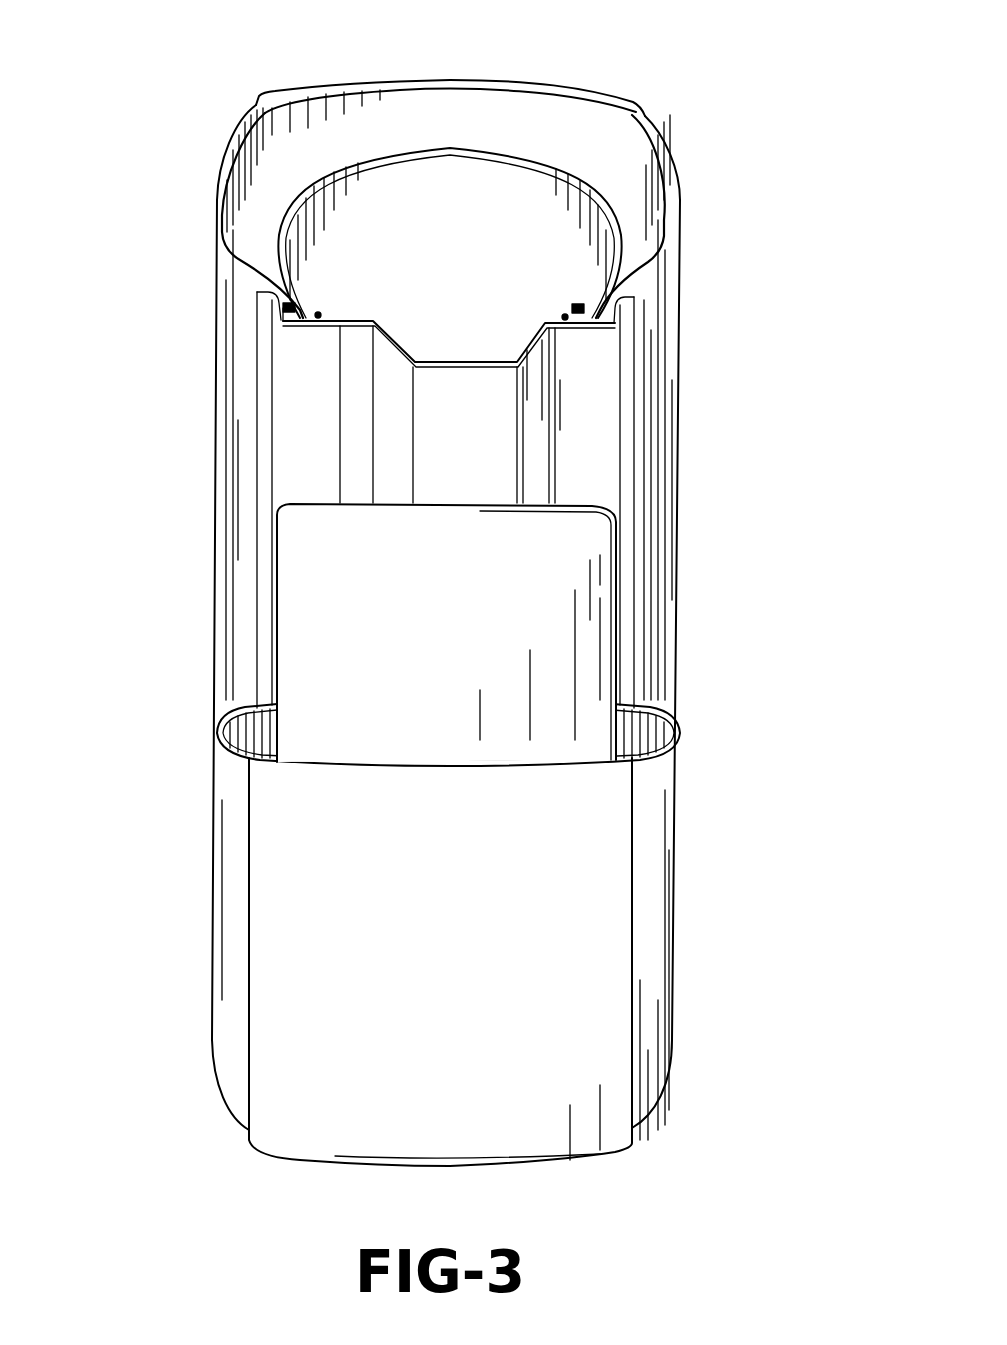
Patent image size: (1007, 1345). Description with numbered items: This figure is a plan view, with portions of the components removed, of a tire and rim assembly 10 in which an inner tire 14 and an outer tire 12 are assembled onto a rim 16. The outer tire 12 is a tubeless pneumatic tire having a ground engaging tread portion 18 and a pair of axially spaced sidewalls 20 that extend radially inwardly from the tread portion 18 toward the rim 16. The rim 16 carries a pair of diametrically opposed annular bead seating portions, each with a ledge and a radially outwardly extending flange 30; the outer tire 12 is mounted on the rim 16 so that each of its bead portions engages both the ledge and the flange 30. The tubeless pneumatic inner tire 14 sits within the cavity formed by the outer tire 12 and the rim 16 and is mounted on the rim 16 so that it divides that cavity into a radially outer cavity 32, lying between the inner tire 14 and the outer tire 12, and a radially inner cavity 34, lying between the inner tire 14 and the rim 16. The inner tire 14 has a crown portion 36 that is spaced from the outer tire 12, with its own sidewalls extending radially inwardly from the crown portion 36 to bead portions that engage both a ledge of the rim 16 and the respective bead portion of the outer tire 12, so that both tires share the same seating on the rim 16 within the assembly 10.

The tire and rim assembly 10 is at (180, 886).
The outer tire 12 is at (196, 241).
The inner tire 14 is at (608, 182).
The rim 16 is at (605, 384).
The tread portion 18 is at (375, 82).
The sidewalls 20 is at (218, 192).
The flange 30 is at (268, 413).
The radially outer cavity 32 is at (594, 134).
The radially inner cavity 34 is at (466, 273).
The crown portion 36 is at (483, 148).